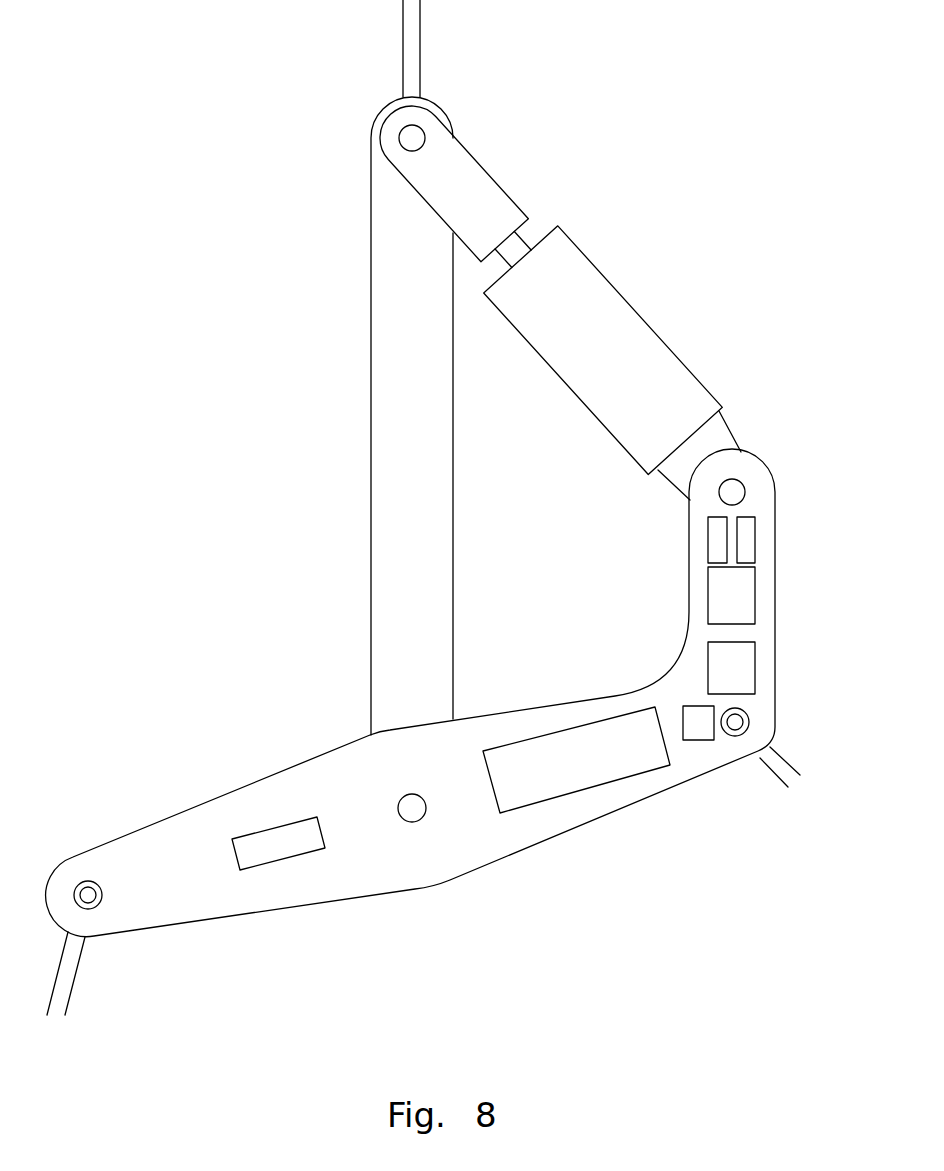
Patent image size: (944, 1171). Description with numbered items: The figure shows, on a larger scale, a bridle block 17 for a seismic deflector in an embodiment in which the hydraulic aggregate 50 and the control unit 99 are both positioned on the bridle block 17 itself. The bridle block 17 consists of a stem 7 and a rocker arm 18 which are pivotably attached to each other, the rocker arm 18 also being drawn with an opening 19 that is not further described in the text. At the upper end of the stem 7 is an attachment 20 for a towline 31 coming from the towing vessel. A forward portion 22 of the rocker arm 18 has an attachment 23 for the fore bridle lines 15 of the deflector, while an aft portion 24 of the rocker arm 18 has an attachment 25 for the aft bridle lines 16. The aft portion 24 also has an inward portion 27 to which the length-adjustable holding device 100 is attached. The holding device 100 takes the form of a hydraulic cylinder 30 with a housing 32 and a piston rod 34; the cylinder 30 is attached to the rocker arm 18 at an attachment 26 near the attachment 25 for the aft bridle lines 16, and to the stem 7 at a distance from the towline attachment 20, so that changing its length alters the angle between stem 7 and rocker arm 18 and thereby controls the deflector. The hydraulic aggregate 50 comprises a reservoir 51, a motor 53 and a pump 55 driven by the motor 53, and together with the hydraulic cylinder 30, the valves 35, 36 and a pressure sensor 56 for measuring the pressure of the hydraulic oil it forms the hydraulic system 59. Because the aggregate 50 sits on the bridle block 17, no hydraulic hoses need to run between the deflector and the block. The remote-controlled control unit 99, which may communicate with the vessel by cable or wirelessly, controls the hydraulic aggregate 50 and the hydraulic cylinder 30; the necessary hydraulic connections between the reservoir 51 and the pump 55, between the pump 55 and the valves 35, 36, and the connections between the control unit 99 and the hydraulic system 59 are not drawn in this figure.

The stem 7 is at (393, 246).
The fore bridle lines 15 is at (68, 983).
The aft bridle lines 16 is at (776, 770).
The bridle block 17 is at (327, 340).
The rocker arm 18 is at (338, 838).
The hole 19 is at (412, 808).
The attachment for towline 20 is at (412, 138).
The forward portion of the rocker arm 22 is at (197, 886).
The attachment for fore bridle lines 23 is at (88, 895).
The aft portion of the rocker arm 24 is at (678, 769).
The attachment for aft bridle lines 25 is at (735, 730).
The attachment of the hydraulic cylinder 26 is at (732, 492).
The inward portion 27 is at (748, 503).
The hydraulic cylinder 30 is at (527, 272).
The towline 31 is at (412, 37).
The housing 32 is at (587, 337).
The piston rod 34 is at (512, 250).
The valve 35 is at (718, 532).
The valve 36 is at (746, 545).
The hydraulic aggregate 50 is at (790, 727).
The reservoir 51 is at (540, 787).
The motor 53 is at (730, 669).
The pump 55 is at (730, 603).
The pressure sensor 56 is at (697, 729).
The hydraulic system 59 is at (728, 125).
The control unit 99 is at (285, 840).
The holding device 100 is at (622, 250).